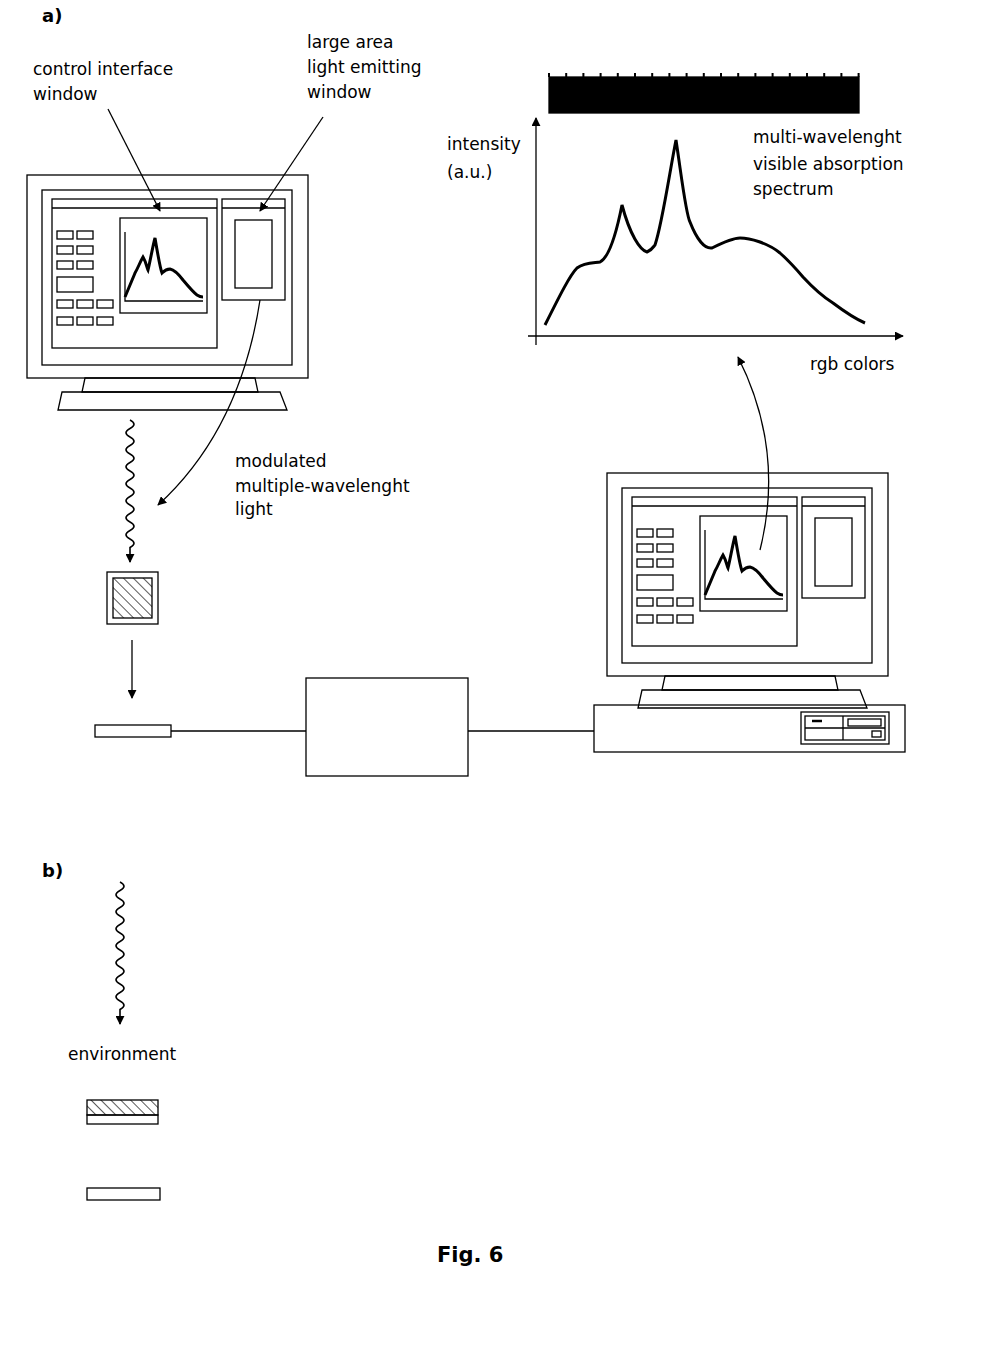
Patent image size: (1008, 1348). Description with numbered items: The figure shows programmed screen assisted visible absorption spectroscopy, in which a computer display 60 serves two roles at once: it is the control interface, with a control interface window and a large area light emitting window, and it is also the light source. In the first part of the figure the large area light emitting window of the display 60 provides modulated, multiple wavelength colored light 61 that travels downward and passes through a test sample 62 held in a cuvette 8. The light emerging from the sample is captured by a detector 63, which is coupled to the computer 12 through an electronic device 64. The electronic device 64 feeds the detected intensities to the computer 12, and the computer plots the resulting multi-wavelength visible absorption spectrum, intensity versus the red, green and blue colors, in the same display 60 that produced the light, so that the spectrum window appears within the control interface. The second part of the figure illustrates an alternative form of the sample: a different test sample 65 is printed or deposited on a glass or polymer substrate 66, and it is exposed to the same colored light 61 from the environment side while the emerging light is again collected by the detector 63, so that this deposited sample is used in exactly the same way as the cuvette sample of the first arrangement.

The display 60 is at (457, 441).
The colored light 61 is at (146, 722).
The test sample 62 is at (132, 598).
The cuvette 8 is at (107, 598).
The detector 63 is at (122, 961).
The electronic device 64 is at (387, 727).
The computer 12 is at (749, 728).
The test sample 65 is at (172, 1101).
The substrate 66 is at (172, 1122).